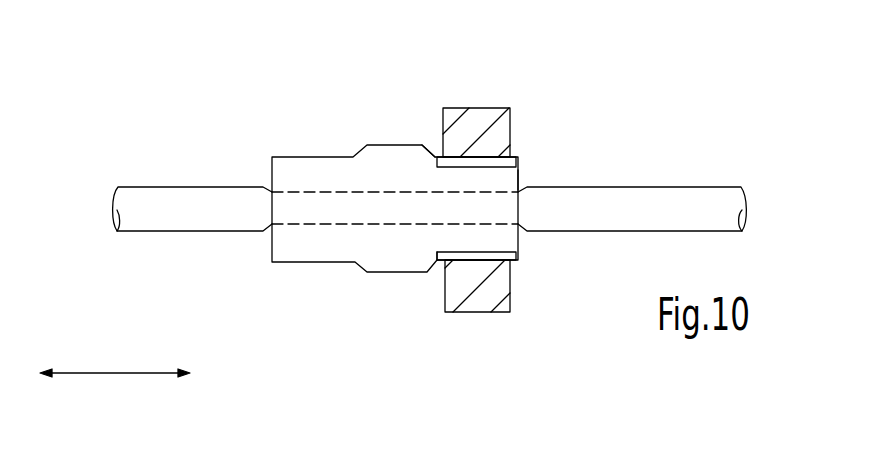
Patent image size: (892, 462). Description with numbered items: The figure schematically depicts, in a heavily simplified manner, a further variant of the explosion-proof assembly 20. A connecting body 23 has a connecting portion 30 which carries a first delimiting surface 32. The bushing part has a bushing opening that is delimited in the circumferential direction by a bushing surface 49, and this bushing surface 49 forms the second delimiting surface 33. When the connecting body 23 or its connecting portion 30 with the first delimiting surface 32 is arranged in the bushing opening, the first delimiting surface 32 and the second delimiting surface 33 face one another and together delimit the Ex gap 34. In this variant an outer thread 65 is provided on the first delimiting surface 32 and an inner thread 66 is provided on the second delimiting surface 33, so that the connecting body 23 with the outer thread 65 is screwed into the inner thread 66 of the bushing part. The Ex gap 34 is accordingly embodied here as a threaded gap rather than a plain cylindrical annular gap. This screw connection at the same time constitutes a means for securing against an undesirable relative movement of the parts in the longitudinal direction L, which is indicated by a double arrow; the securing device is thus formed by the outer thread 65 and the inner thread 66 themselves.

The explosion-proof assembly 20 is at (710, 120).
The connecting body 23 is at (298, 250).
The connecting portion 30 is at (438, 148).
The first delimiting surface 32 is at (475, 165).
The second delimiting surface 33 is at (482, 257).
The bushing surface 49 is at (476, 256).
The Ex gap 34 is at (516, 162).
The outer thread 65 is at (452, 253).
The inner thread 66 is at (518, 178).
The longitudinal direction L is at (110, 373).